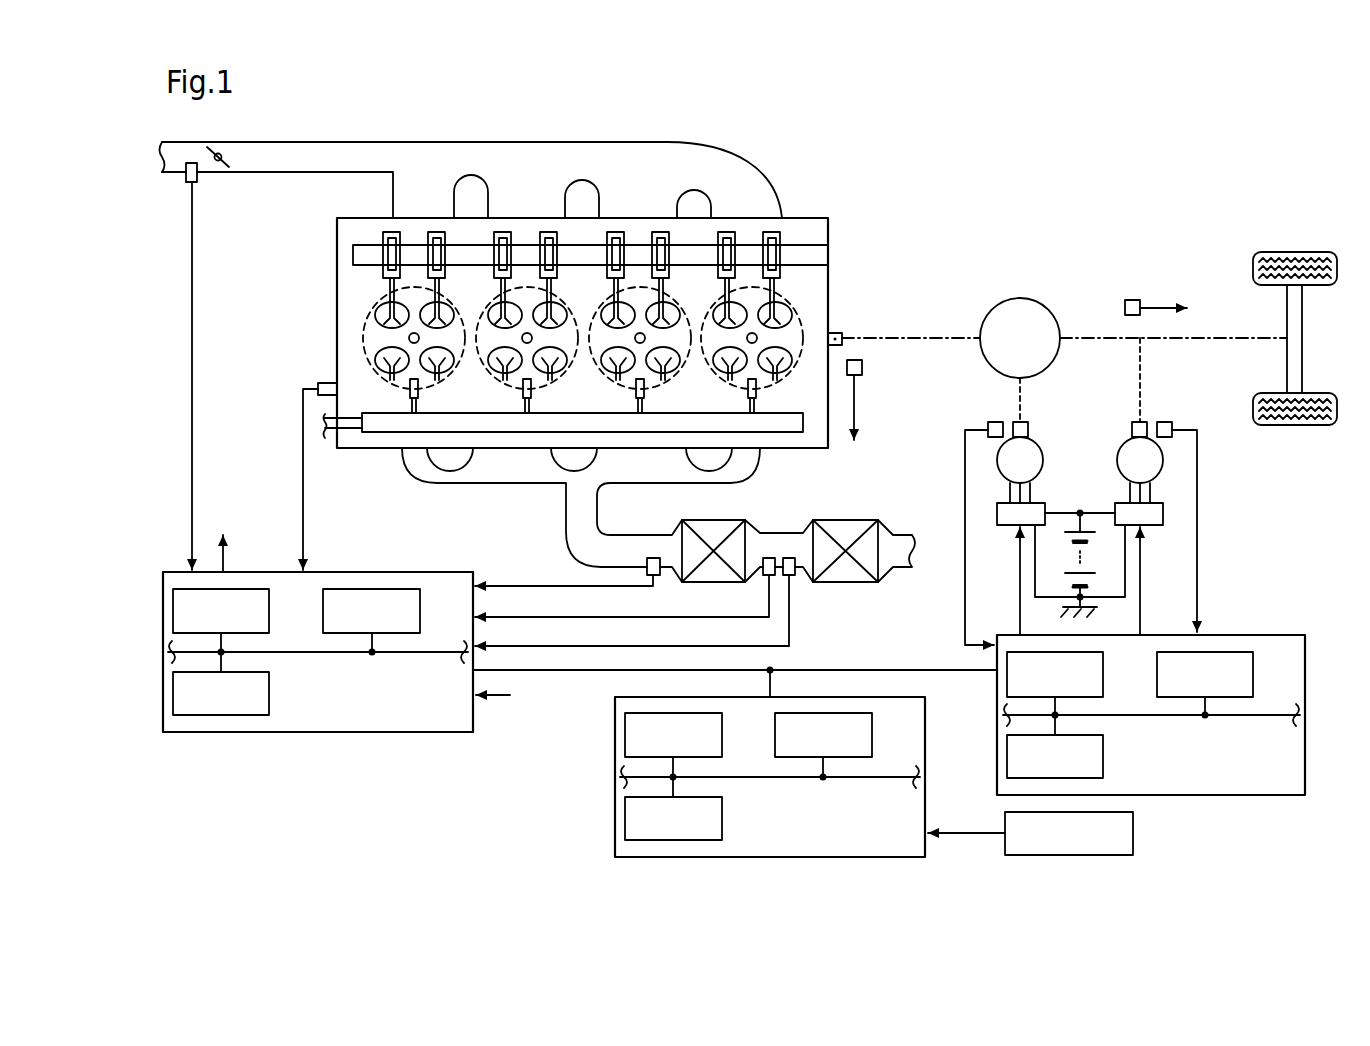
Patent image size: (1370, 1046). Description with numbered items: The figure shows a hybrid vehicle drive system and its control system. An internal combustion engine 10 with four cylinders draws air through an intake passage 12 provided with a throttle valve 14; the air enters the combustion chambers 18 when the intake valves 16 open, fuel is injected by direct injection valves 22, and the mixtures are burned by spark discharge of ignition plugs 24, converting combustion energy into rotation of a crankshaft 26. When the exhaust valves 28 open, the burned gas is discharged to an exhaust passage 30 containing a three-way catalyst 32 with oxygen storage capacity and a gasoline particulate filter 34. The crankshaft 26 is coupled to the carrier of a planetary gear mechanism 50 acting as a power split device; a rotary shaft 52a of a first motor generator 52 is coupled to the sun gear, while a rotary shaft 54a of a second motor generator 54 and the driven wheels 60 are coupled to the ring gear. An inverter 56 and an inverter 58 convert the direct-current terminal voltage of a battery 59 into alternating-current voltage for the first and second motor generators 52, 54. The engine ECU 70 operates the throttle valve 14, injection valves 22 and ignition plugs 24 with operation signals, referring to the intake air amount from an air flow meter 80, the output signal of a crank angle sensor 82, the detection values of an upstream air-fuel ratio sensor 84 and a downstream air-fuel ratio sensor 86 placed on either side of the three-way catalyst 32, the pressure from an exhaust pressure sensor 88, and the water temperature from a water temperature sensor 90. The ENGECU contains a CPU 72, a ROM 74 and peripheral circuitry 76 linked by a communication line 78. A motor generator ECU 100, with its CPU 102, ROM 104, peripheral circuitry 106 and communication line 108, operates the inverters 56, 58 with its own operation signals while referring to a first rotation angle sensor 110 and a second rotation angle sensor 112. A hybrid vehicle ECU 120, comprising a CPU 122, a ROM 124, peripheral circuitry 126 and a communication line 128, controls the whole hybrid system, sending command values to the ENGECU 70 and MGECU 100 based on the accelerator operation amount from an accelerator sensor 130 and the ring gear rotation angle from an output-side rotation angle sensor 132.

The internal combustion engine 10 is at (832, 195).
The intake passage 12 is at (186, 149).
The throttle valve 14 is at (224, 154).
The intake valves 16 is at (388, 283).
The combustion chambers 18 is at (363, 338).
The direct injection valves 22 is at (420, 390).
The ignition plugs 24 is at (420, 338).
The crankshaft 26 is at (838, 333).
The exhaust valves 28 is at (442, 370).
The exhaust passage 30 is at (648, 478).
The three-way catalyst 32 is at (718, 518).
The gasoline particulate filter 34 is at (848, 518).
The planetary gear mechanism 50 is at (1058, 310).
The first motor generator 52 is at (1044, 460).
The rotary shaft of the first motor generator 52a is at (1030, 427).
The second motor generator 54 is at (1117, 470).
The rotary shaft of the second motor generator 54a is at (1136, 422).
The inverter 56 is at (1000, 514).
The inverter 58 is at (1162, 514).
The battery 59 is at (1089, 530).
The driven wheels 60 is at (1335, 426).
The engine ECU 70 is at (358, 623).
The CPU 72 is at (262, 589).
The ROM 74 is at (413, 589).
The peripheral circuitry 76 is at (269, 692).
The communication line 78 is at (437, 650).
The air flow meter 80 is at (198, 180).
The crank angle sensor 82 is at (862, 367).
The upstream air-fuel ratio sensor 84 is at (645, 566).
The downstream air-fuel ratio sensor 86 is at (764, 580).
The exhaust pressure sensor 88 is at (797, 578).
The water temperature sensor 90 is at (320, 383).
The motor generator ECU 100 is at (1145, 662).
The CPU 102 is at (1092, 652).
The ROM 104 is at (1245, 652).
The peripheral circuitry 106 is at (1103, 757).
The communication line 108 is at (1248, 718).
The first rotation angle sensor 110 is at (990, 422).
The second rotation angle sensor 112 is at (1164, 422).
The hybrid vehicle ECU 120 is at (793, 767).
The CPU 122 is at (710, 714).
The ROM 124 is at (862, 714).
The peripheral circuitry 126 is at (722, 817).
The communication line 128 is at (857, 779).
The accelerator sensor 130 is at (1133, 834).
The output-side rotation angle sensor 132 is at (1131, 300).